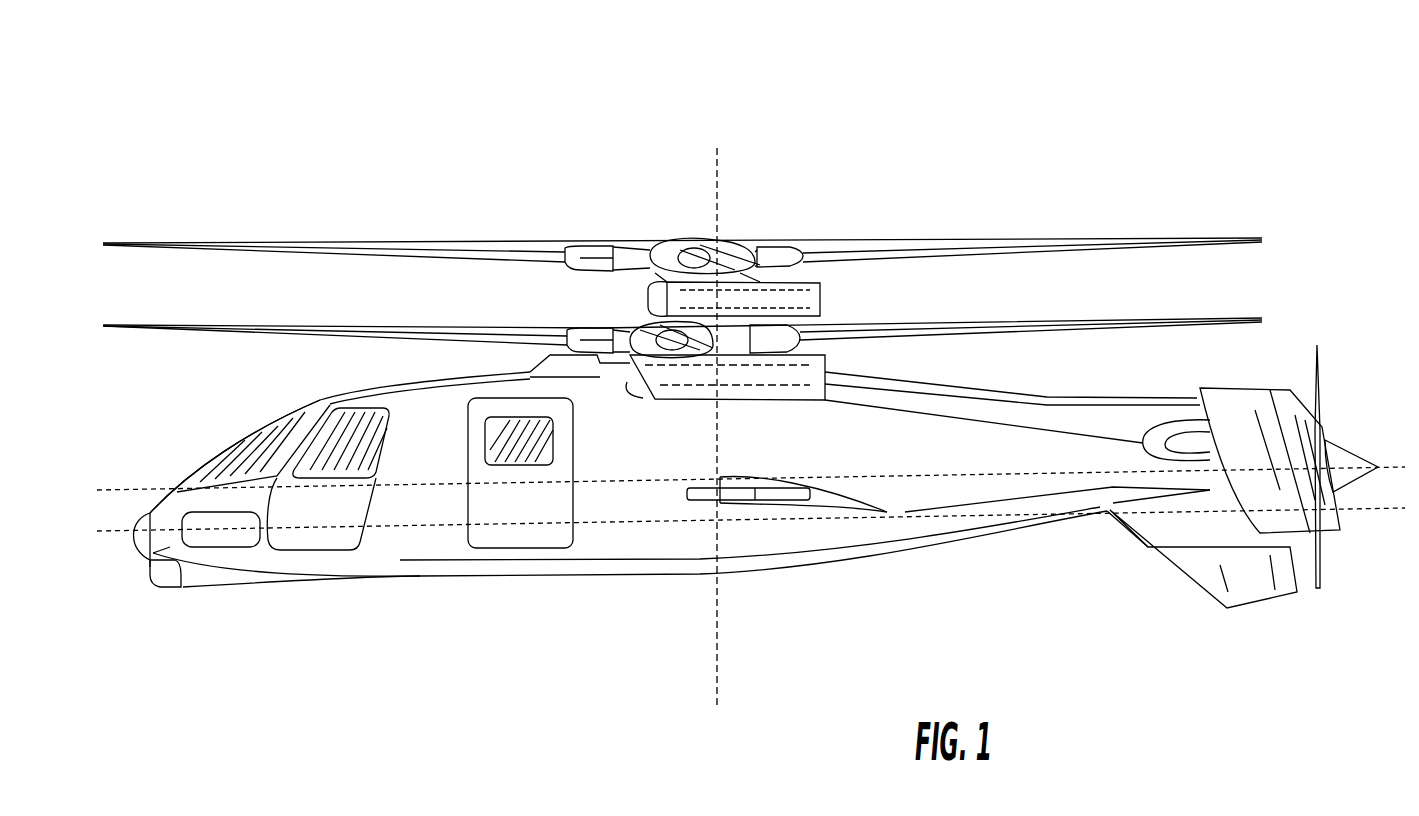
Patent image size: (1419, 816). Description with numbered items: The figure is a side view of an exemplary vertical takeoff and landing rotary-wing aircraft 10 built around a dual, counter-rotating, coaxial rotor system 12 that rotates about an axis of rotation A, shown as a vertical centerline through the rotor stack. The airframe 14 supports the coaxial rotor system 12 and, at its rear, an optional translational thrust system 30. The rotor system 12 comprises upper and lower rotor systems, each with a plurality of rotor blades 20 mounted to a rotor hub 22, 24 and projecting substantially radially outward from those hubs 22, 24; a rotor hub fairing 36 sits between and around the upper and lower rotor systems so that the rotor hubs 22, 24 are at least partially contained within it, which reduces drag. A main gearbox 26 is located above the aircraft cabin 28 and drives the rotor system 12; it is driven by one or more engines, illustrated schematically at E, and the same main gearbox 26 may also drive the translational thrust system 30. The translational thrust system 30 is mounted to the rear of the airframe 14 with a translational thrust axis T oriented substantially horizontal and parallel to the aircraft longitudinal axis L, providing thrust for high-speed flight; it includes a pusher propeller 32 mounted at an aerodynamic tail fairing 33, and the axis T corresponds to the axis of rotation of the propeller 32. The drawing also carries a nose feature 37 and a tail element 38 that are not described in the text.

The rotary-wing aircraft 10 is at (893, 76).
The coaxial rotor system 12 is at (811, 194).
The airframe 14 is at (330, 402).
The rotor blades 20 is at (1062, 248).
The rotor hub 22 is at (650, 240).
The rotor hub 24 is at (650, 316).
The main gearbox 26 is at (687, 383).
The aircraft cabin 28 is at (412, 560).
The translational thrust system 30 is at (1325, 332).
The pusher propeller 32 is at (1320, 570).
The aerodynamic tail fairing 33 is at (1208, 587).
The rotor hub fairing 36 is at (847, 307).
The nose sensor 37 is at (153, 573).
The extending tail / stabilizer 38 is at (1103, 503).
The engine E is at (848, 382).
The axis of rotation A is at (716, 442).
The translational thrust axis T is at (746, 476).
The aircraft longitudinal axis L is at (746, 515).